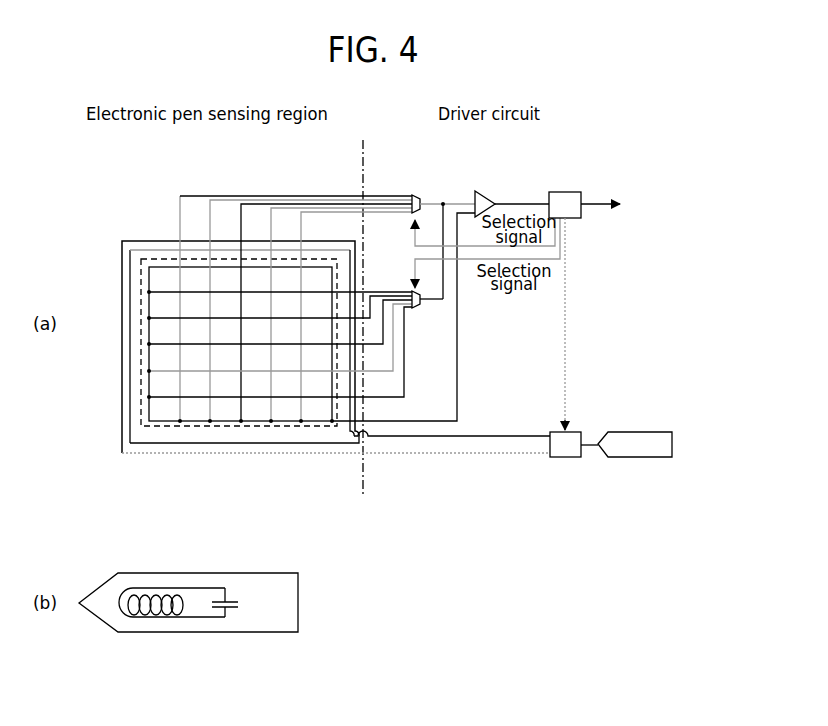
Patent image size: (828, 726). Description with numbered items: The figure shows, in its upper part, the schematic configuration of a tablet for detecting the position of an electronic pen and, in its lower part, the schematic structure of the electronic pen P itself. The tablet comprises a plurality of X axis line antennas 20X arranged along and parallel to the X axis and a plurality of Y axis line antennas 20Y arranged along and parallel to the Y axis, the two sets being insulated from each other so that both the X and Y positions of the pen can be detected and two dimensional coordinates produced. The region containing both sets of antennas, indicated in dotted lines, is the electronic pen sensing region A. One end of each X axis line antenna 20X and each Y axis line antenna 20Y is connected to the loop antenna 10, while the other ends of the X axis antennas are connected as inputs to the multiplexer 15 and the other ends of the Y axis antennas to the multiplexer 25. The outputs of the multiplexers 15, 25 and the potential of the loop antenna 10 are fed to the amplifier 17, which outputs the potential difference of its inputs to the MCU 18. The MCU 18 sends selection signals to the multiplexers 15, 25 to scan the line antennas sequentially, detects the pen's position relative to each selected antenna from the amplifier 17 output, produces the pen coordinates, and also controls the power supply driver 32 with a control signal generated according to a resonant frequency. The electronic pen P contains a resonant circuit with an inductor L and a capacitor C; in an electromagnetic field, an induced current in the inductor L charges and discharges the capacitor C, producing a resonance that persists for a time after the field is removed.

The loop antenna 10 is at (154, 259).
The X axis line antennas 20X is at (175, 304).
The Y axis line antennas 20Y is at (166, 322).
The electronic pen sensing region A is at (138, 407).
The multiplexer 15 is at (414, 195).
The multiplexer 25 is at (416, 308).
The amplifier 17 is at (480, 191).
The MCU 18 is at (565, 192).
The power supply driver 32 is at (558, 458).
The electronic pen P is at (298, 605).
The inductor L is at (156, 617).
The capacitor C is at (228, 612).